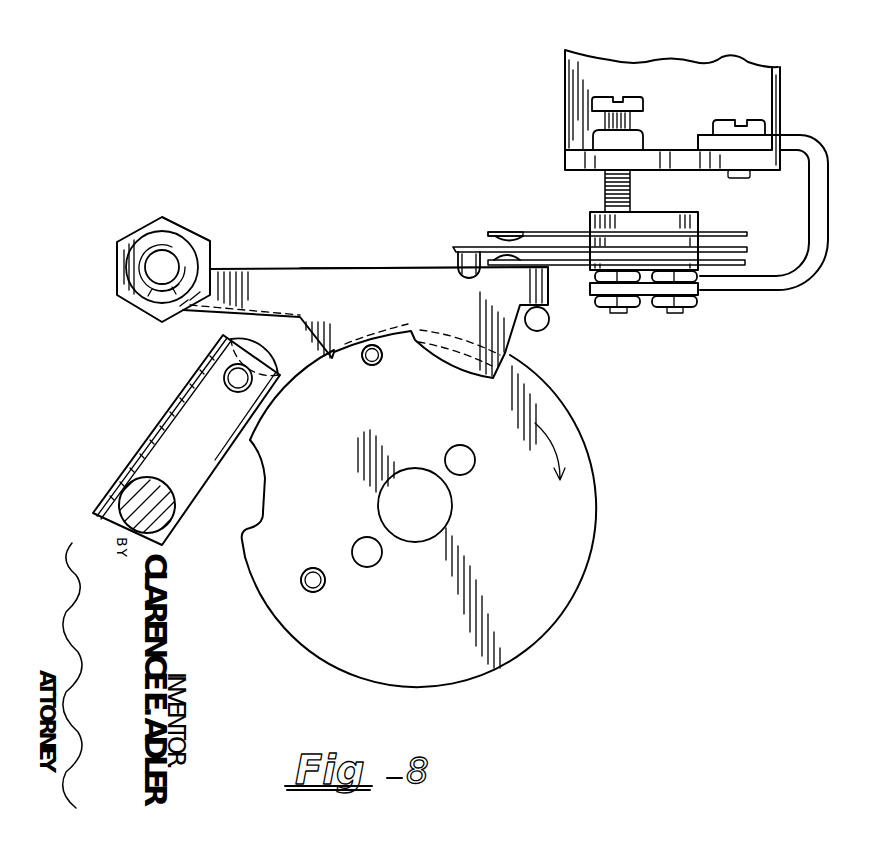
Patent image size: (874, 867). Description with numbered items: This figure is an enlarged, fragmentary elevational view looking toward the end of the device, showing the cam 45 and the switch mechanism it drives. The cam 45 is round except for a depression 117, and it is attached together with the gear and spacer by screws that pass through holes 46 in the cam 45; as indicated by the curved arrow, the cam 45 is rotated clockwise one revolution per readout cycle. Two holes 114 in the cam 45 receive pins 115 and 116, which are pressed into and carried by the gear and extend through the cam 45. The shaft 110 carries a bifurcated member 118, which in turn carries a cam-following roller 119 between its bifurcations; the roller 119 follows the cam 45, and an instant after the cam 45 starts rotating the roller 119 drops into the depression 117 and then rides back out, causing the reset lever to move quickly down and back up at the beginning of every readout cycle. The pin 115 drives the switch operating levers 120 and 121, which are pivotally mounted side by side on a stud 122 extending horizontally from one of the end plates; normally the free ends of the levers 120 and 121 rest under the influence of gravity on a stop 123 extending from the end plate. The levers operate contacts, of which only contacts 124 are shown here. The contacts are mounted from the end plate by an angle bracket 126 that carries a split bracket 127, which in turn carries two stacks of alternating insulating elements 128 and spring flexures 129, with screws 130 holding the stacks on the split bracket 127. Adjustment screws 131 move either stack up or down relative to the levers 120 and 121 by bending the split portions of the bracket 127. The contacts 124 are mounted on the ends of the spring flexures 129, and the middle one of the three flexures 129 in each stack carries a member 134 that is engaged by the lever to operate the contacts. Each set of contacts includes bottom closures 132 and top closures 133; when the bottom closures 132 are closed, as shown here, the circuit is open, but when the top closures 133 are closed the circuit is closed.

The cam 45 is at (503, 657).
The holes 46 is at (474, 457).
The shaft 110 is at (140, 497).
The holes 114 is at (383, 359).
The pin 115 is at (363, 362).
The pin 116 is at (304, 568).
The depression 117 is at (244, 525).
The bifurcated member 118 is at (172, 404).
The cam-following roller 119 is at (248, 343).
The switch operating lever 120 is at (248, 287).
The switch operating lever 121 is at (370, 266).
The stud 122 is at (170, 262).
The stop 123 is at (542, 324).
The contacts 124 is at (492, 239).
The angle bracket 126 is at (662, 148).
The split bracket 127 is at (787, 283).
The insulating elements 128 is at (688, 212).
The spring flexures 129 is at (745, 261).
The screws 130 is at (677, 313).
The adjustment screws 131 is at (631, 193).
The bottom closures 132 is at (530, 258).
The top closures 133 is at (540, 223).
The members 134 is at (458, 258).